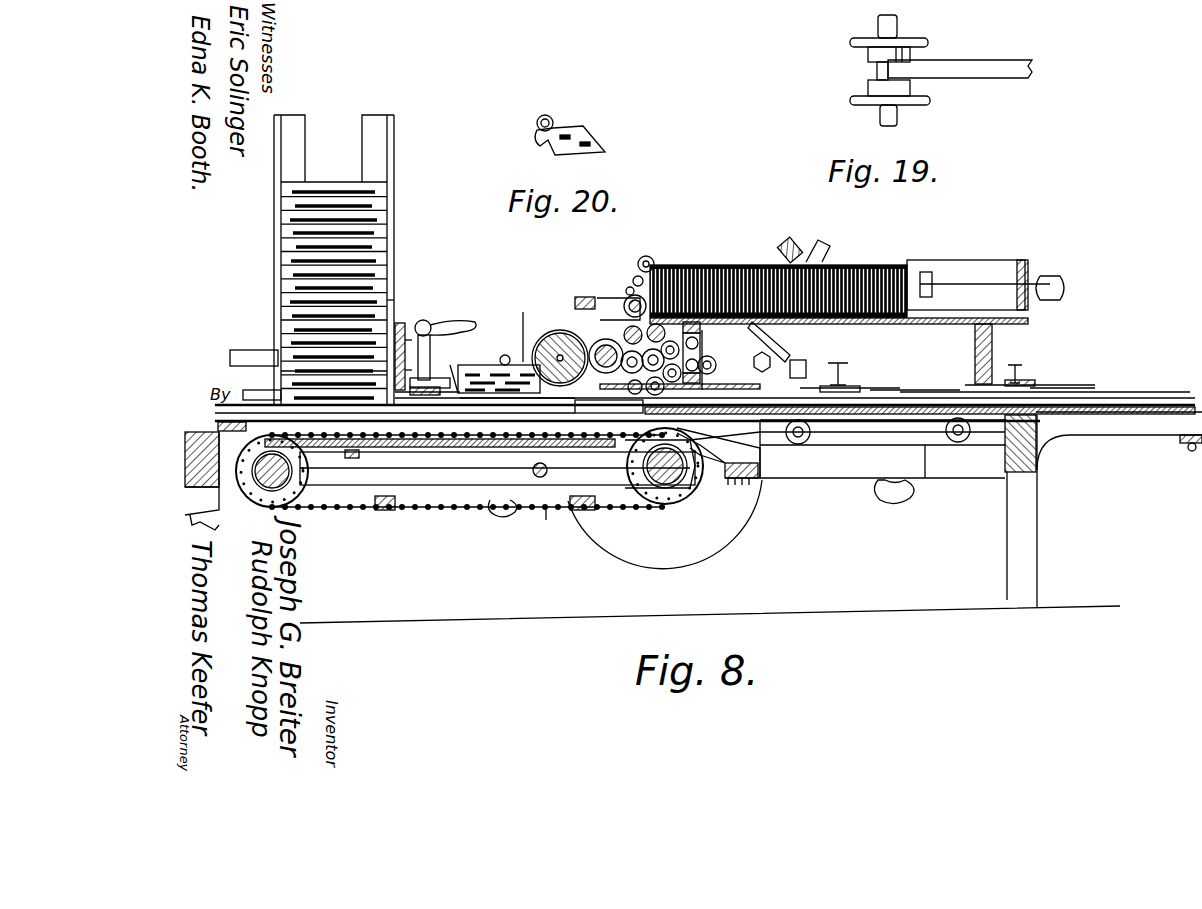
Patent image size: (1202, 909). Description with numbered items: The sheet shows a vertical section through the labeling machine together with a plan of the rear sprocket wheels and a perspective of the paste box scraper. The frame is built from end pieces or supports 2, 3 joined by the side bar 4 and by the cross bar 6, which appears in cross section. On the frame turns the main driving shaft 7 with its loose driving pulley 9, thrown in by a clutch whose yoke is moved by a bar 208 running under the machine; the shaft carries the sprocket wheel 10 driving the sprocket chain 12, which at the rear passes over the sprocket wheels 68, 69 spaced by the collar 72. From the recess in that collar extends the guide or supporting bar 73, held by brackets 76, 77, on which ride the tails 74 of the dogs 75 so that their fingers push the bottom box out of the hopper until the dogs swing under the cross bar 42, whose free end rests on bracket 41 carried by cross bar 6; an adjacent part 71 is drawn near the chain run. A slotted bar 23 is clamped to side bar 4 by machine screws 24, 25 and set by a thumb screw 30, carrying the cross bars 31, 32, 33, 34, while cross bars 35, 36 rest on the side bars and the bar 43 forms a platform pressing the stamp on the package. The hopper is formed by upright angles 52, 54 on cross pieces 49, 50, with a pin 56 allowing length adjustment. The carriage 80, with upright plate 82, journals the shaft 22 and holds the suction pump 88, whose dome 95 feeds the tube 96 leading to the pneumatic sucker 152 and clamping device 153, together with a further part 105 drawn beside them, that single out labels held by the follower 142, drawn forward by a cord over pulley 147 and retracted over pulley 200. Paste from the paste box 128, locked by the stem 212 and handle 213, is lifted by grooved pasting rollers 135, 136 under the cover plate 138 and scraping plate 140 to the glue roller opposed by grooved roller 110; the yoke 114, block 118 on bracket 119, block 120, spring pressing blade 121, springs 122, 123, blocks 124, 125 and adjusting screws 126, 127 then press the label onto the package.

In FIG. 8, the end piece or support 2 is at (185, 472).
In FIG. 8, the end piece or support 3 is at (1036, 502).
In FIG. 8, the side bar 4 is at (870, 465).
In FIG. 8, the cross bar 6 is at (762, 480).
In FIG. 8, the main driving shaft 7 is at (682, 486).
In FIG. 8, the driving pulley 9 is at (742, 527).
In FIG. 8, the sprocket wheel 10 is at (665, 500).
In FIG. 8, the sprocket chain 12 is at (549, 523).
In FIG. 8, the shaft 22 is at (718, 365).
In FIG. 8, the bar 23 is at (927, 447).
In FIG. 8, the machine screw 24 is at (960, 445).
In FIG. 8, the machine screw 25 is at (802, 445).
In FIG. 8, the thumb screw 30 is at (498, 512).
In FIG. 8, the cross bar 31 is at (705, 405).
In FIG. 8, the cross bar 32 is at (609, 406).
In FIG. 8, the cross bar 33 is at (805, 378).
In FIG. 8, the cross bar 34 is at (968, 386).
In FIG. 8, the cross bar 35 is at (1105, 436).
In FIG. 8, the cross bar 36 is at (218, 422).
In FIG. 8, the bracket 41 is at (752, 455).
In FIG. 8, the cross bar 42 is at (725, 433).
In FIG. 8, the bar 43 is at (882, 432).
In FIG. 8, the cross piece 49 is at (402, 324).
In FIG. 8, the cross piece 50 is at (388, 370).
In FIG. 8, the upright angle 52 is at (393, 238).
In FIG. 8, the upright angle 54 is at (276, 249).
In FIG. 8, the pin 56 is at (240, 352).
In FIG. 19, the sprocket wheel 68 is at (852, 42).
In FIG. 19, the sprocket wheel 69 is at (856, 104).
In FIG. 8, the guide plate 71 is at (440, 458).
In FIG. 19, the collar 72 is at (868, 60).
In FIG. 19, the guide or supporting bar 73 is at (958, 62).
In FIG. 8, the guide or supporting bar 73 is at (469, 467).
In FIG. 8, the tail 74 is at (460, 491).
In FIG. 8, the dog 75 is at (266, 430).
In FIG. 8, the bracket 76 is at (350, 458).
In FIG. 8, the bracket 77 is at (495, 468).
In FIG. 8, the carriage 80 is at (604, 298).
In FIG. 8, the upright plate 82 is at (790, 356).
In FIG. 8, the suction pump 88 is at (770, 264).
In FIG. 8, the dome 95 is at (820, 246).
In FIG. 8, the tube 96 is at (796, 244).
In FIG. 8, the roller 105 is at (647, 256).
In FIG. 8, the grooved roller 110 is at (670, 350).
In FIG. 8, the yoke 114 is at (546, 406).
In FIG. 8, the block 118 is at (723, 360).
In FIG. 8, the bracket 119 is at (700, 350).
In FIG. 8, the block 120 is at (687, 385).
In FIG. 8, the spring pressing blade 121 is at (900, 392).
In FIG. 8, the spring 122 is at (850, 378).
In FIG. 8, the spring 123 is at (1035, 388).
In FIG. 8, the block 124 is at (846, 385).
In FIG. 8, the block 125 is at (1030, 380).
In FIG. 8, the adjusting screw 126 is at (840, 362).
In FIG. 8, the adjusting screw 127 is at (1016, 365).
In FIG. 8, the paste box 128 is at (458, 367).
In FIG. 8, the grooved pasting roller 135 is at (553, 335).
In FIG. 8, the grooved pasting roller 136 is at (600, 342).
In FIG. 8, the cover plate 138 is at (476, 366).
In FIG. 20, the scraping plate 140 is at (590, 136).
In FIG. 8, the scraping plate 140 is at (517, 333).
In FIG. 8, the follower 142 is at (935, 262).
In FIG. 8, the pulley 147 is at (992, 345).
In FIG. 8, the pneumatic sucker 152 is at (637, 277).
In FIG. 8, the clamping device 153 is at (640, 262).
In FIG. 8, the pulley 200 is at (1060, 280).
In FIG. 8, the bar 208 is at (519, 469).
In FIG. 8, the stem 212 is at (430, 330).
In FIG. 8, the handle 213 is at (470, 320).